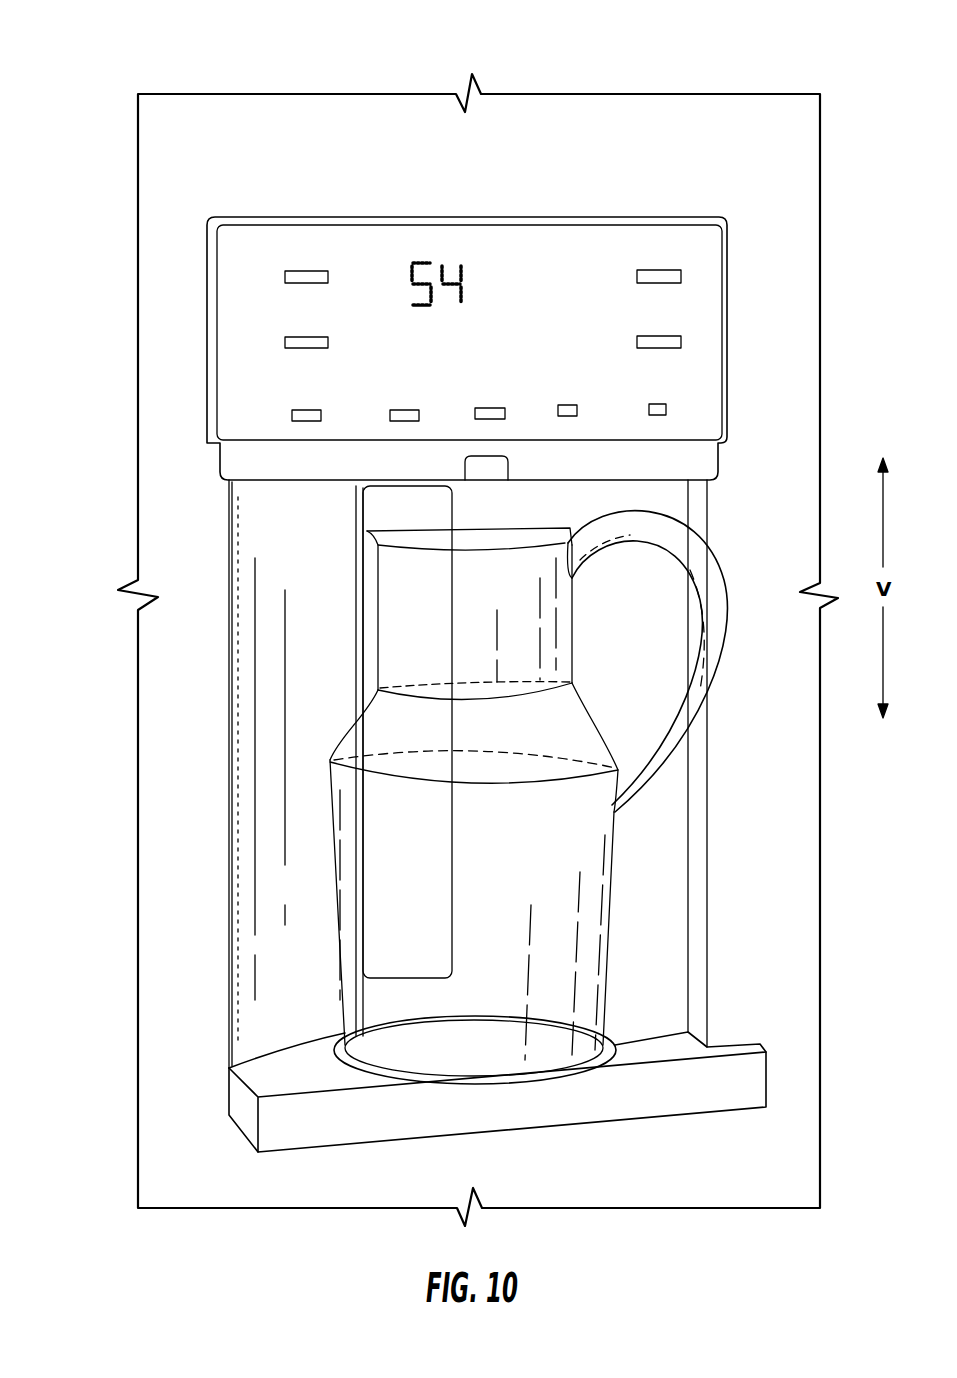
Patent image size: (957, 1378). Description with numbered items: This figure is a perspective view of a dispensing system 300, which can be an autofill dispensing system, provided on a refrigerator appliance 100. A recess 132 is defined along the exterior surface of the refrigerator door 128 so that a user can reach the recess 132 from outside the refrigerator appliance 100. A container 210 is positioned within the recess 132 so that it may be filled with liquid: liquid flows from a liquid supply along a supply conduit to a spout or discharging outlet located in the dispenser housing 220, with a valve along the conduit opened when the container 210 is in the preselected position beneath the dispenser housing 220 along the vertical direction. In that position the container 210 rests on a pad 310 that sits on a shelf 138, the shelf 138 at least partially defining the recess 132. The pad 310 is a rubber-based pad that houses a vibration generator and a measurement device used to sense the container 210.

The refrigerator appliance 100 is at (788, 72).
The dispensing system 300 is at (98, 298).
The dispenser housing 220 is at (262, 459).
The refrigerator door 128 is at (157, 658).
The recess 132 is at (263, 698).
The container 210 is at (345, 855).
The shelf 138 is at (272, 1067).
The pad 310 is at (608, 1055).